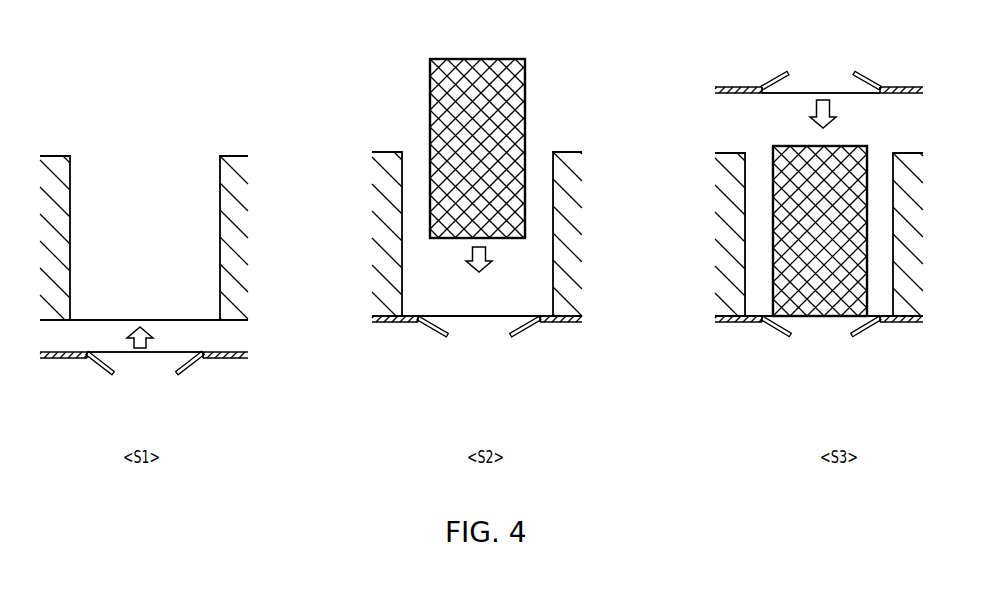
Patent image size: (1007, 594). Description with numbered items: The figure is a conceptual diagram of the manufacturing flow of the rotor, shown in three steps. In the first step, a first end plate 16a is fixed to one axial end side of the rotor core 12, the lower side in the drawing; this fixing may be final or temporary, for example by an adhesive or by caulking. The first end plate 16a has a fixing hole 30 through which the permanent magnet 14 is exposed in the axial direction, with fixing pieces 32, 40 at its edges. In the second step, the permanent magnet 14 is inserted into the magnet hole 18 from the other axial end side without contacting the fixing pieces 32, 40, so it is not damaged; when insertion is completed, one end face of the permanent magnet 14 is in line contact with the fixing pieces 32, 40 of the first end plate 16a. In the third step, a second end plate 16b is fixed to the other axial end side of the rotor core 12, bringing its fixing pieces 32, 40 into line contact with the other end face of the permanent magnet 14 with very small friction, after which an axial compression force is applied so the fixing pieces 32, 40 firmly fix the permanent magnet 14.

The rotor core 12 is at (238, 225).
The permanent magnet 14 is at (472, 63).
The first end plate 16a is at (230, 357).
The second end plate 16b is at (897, 87).
The magnet hole 18 is at (152, 234).
The fixing hole 30 is at (148, 358).
The fixing piece 32 is at (494, 224).
The valve 40 is at (102, 368).